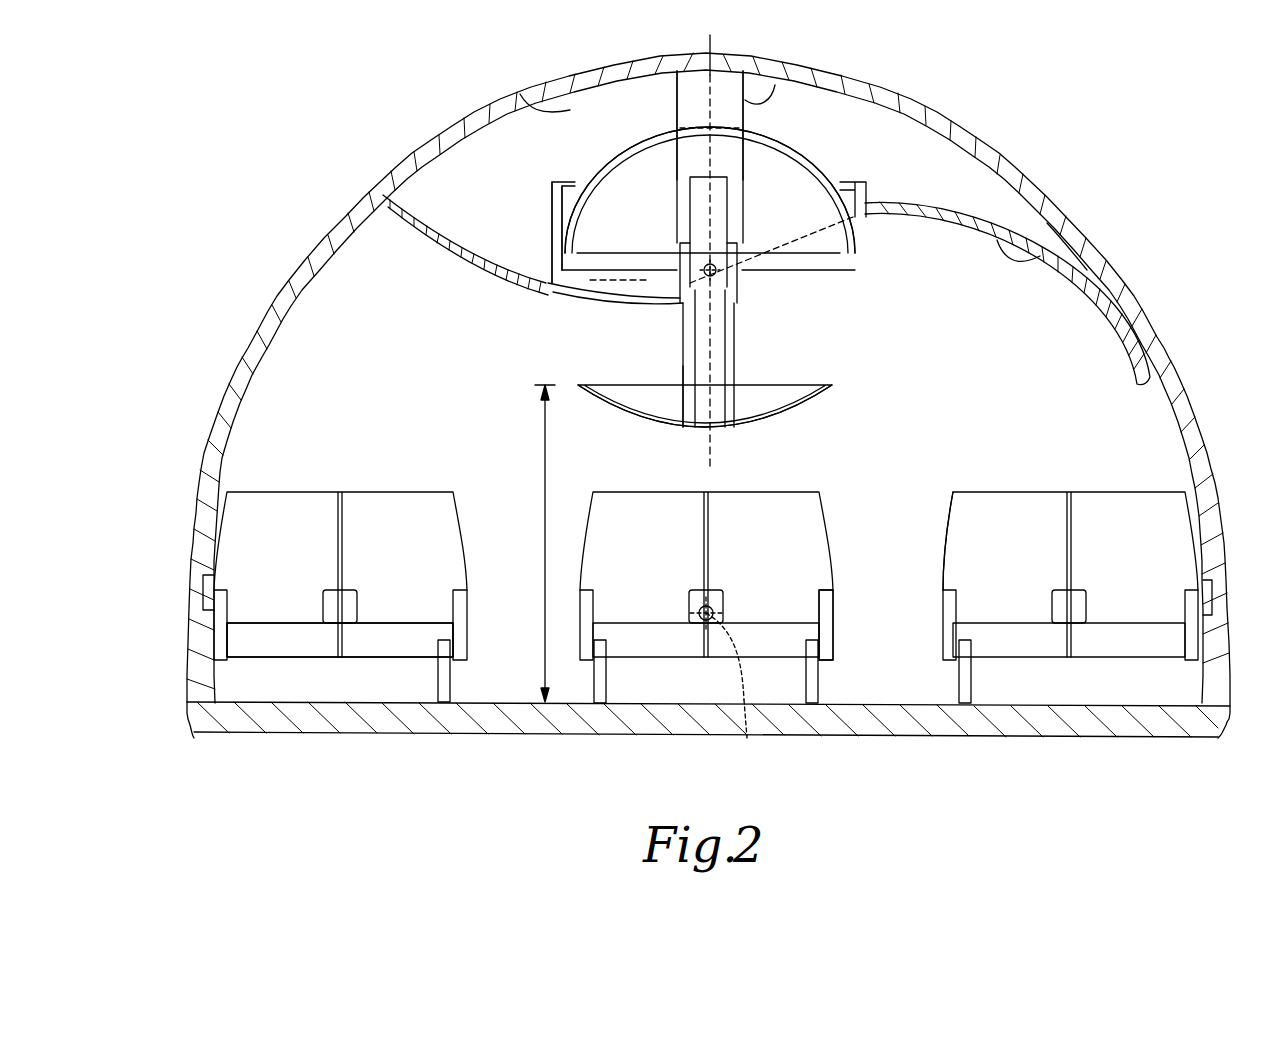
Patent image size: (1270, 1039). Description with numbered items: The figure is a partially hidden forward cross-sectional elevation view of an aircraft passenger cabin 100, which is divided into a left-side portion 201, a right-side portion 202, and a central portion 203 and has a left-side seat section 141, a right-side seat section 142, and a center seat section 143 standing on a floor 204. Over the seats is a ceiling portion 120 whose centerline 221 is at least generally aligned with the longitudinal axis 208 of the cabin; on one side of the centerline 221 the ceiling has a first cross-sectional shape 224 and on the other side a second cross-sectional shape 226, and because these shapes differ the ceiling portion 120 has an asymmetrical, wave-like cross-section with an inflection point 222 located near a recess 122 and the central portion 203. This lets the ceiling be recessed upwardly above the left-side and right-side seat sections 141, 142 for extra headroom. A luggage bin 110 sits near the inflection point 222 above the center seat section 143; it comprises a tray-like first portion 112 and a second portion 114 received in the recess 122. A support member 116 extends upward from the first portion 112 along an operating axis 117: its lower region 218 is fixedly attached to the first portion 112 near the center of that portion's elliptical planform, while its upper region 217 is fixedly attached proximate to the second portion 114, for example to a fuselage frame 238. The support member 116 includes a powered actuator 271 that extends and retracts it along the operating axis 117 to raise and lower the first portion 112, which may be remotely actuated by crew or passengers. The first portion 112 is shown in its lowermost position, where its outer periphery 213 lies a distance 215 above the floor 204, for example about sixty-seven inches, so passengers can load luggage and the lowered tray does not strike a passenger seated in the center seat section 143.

The passenger cabin 100 is at (347, 278).
The luggage bin 110 is at (542, 298).
The first portion 112 is at (835, 415).
The second portion 114 is at (640, 132).
The support member 116 is at (728, 203).
The operating axis 117 is at (718, 353).
The ceiling portion 120 is at (1062, 231).
The recess 122 is at (570, 258).
The left-side seat section 141 is at (310, 658).
The right-side seat section 142 is at (947, 560).
The center seat section 143 is at (833, 577).
The left-side portion 201 is at (362, 462).
The right-side portion 202 is at (1056, 480).
The central portion 203 is at (776, 473).
The floor 204 is at (518, 702).
The longitudinal axis 208 is at (748, 740).
The outer periphery 213 is at (835, 387).
The distance 215 is at (540, 462).
The upper region 217 is at (775, 85).
The lower region 218 is at (683, 366).
The centerline 221 is at (712, 43).
The inflection point 222 is at (757, 262).
The first cross-sectional shape 224 is at (470, 264).
The second cross-sectional shape 226 is at (945, 216).
The fuselage frame 238 is at (527, 108).
The powered actuator 271 is at (745, 218).